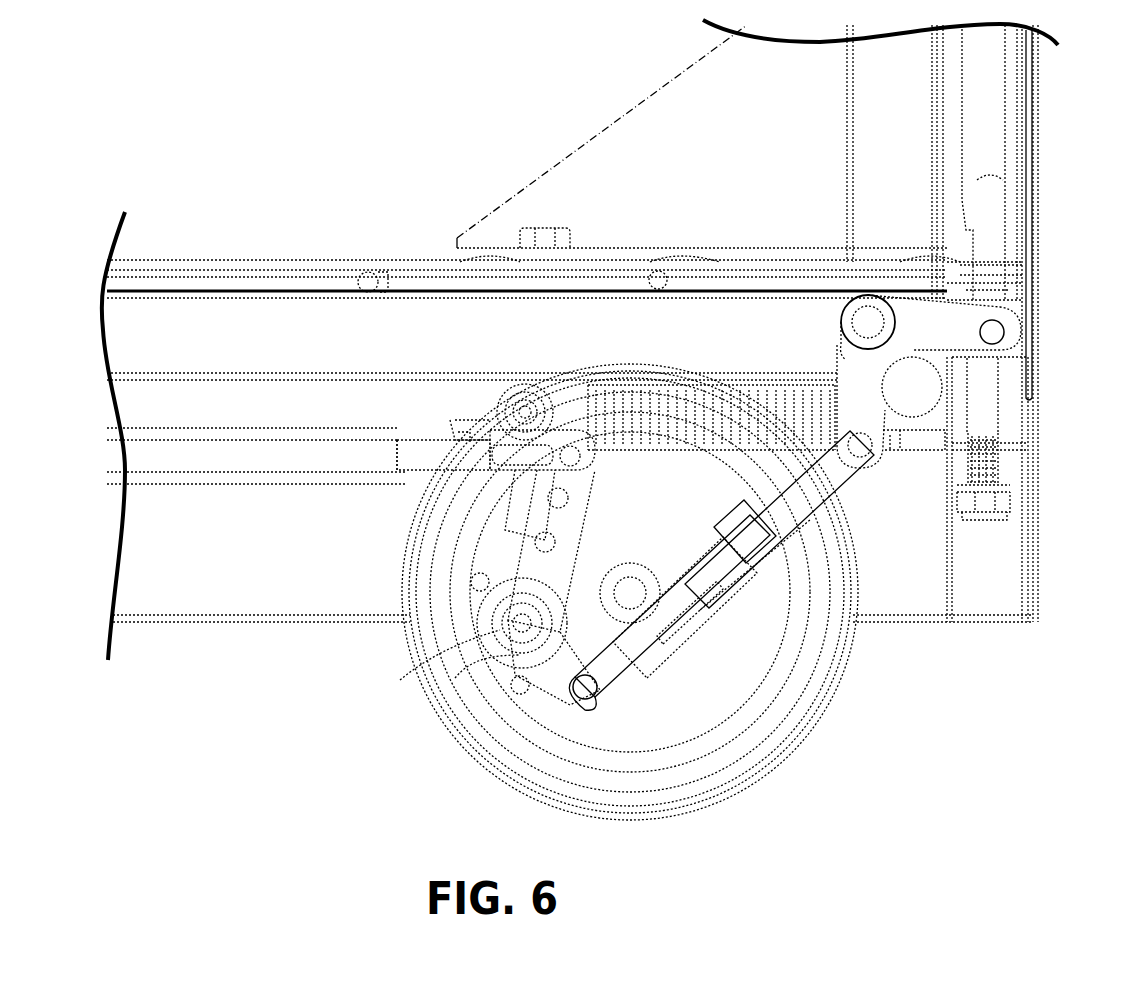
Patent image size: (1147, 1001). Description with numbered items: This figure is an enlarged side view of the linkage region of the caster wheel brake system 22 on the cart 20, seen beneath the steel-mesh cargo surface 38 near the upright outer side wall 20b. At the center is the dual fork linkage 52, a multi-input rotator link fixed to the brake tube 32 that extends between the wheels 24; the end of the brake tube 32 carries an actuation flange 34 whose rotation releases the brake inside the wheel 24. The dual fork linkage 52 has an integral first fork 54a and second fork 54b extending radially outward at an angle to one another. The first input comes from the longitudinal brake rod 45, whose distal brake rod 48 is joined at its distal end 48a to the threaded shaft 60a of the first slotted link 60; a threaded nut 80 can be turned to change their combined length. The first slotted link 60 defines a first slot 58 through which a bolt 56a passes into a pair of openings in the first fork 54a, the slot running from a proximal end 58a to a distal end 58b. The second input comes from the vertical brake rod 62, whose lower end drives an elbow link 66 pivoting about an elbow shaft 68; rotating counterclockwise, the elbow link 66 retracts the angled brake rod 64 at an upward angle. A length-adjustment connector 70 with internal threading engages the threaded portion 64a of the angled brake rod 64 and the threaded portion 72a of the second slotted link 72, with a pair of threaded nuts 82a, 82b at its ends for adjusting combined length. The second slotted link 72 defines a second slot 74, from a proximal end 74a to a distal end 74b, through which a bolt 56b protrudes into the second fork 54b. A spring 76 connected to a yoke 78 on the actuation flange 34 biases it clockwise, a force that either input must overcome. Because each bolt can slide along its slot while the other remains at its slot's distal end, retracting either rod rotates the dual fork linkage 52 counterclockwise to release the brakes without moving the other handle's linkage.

The cart 20 is at (481, 155).
The upright outer side wall 20b is at (1048, 210).
The caster wheel brake system 22 is at (935, 735).
The wheel 24 is at (548, 800).
The brake tube 32 is at (475, 632).
The actuation flange 34 is at (470, 686).
The cargo surface 38 is at (355, 278).
The longitudinal brake rod 45 is at (168, 525).
The distal brake rod 48 is at (262, 485).
The distal end 48a is at (400, 490).
The dual fork linkage 52 is at (578, 605).
The first fork 54a is at (585, 508).
The second fork 54b is at (545, 690).
The bolt 56a is at (562, 445).
The bolt 56b is at (583, 697).
The first slot 58 is at (500, 478).
The proximal end 58a is at (496, 478).
The distal end 58b is at (580, 468).
The first slotted link 60 is at (468, 432).
The threaded shaft 60a is at (428, 440).
The vertical brake rod 62 is at (998, 134).
The angled brake rod 64 is at (827, 497).
The threaded portion 64a is at (737, 533).
The elbow link 66 is at (1006, 333).
The elbow shaft 68 is at (852, 320).
The length-adjustment connector 70 is at (778, 592).
The second slotted link 72 is at (693, 645).
The threaded portion 72a is at (678, 582).
The second slot 74 is at (622, 672).
The proximal end 74a is at (663, 652).
The distal end 74b is at (608, 695).
The spring 76 is at (744, 388).
The yoke 78 is at (512, 522).
The threaded nut 80 is at (470, 436).
The threaded nut 82a is at (712, 610).
The threaded nut 82b is at (805, 522).